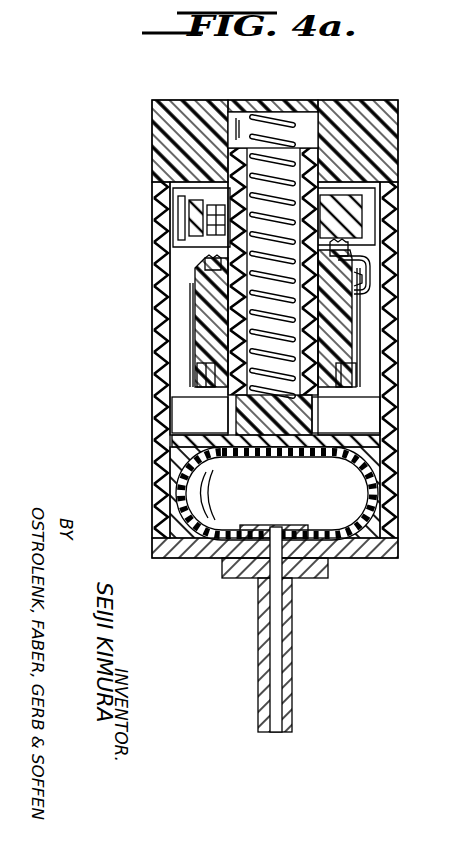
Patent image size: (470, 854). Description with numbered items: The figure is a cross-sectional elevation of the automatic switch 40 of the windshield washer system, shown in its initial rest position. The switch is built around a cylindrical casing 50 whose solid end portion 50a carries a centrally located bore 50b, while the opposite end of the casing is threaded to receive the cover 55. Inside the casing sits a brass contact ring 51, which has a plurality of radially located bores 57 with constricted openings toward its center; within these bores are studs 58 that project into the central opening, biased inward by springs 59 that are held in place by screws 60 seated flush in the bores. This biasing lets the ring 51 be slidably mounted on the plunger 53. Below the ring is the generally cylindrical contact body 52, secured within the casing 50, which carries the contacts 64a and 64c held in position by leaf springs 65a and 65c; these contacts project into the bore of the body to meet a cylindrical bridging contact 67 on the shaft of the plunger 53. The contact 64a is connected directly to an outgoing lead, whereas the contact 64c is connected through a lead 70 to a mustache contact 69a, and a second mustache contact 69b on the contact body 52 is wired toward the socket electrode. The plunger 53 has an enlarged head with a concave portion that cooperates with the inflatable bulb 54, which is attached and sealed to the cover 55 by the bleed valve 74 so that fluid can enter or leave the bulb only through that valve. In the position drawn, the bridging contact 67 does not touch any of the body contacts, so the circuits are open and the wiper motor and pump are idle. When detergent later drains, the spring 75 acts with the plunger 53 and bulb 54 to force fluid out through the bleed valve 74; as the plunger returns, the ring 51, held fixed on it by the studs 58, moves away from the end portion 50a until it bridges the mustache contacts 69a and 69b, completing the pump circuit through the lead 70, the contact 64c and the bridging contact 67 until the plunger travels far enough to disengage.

The automatic switch 40 is at (242, 399).
The cylindrical casing 50 is at (301, 312).
The solid end portion 50a is at (190, 110).
The bore 50b is at (306, 128).
The contact ring 51 is at (363, 215).
The contact body 52 is at (337, 323).
The plunger 53 is at (352, 366).
The inflatable bulb 54 is at (365, 462).
The cover 55 is at (398, 548).
The bores 57 is at (155, 242).
The studs 58 is at (155, 181).
The springs 59 is at (154, 194).
The screws 60 is at (155, 232).
The contact 64a is at (154, 398).
The contact 64c is at (320, 399).
The leaf spring 65a is at (154, 344).
The leaf spring 65c is at (356, 350).
The cylindrical bridging contact 67 is at (330, 437).
The mustache contact 69a is at (338, 248).
The mustache contact 69b is at (154, 258).
The lead 70 is at (365, 274).
The bleed valve 74 is at (297, 582).
The spring 75 is at (265, 125).